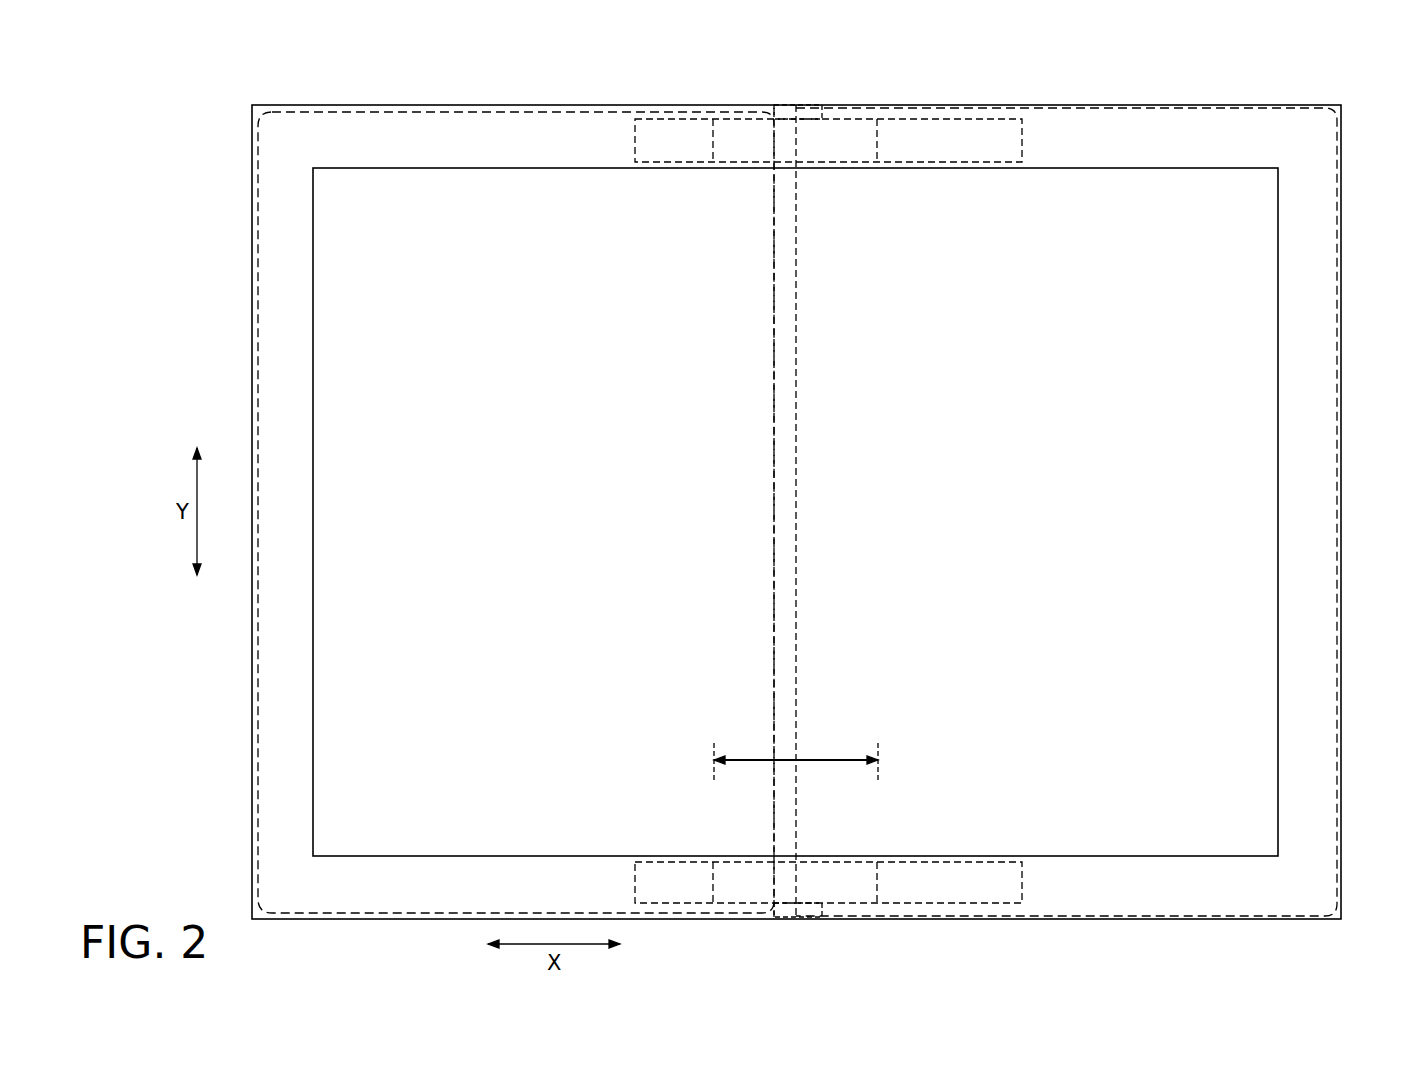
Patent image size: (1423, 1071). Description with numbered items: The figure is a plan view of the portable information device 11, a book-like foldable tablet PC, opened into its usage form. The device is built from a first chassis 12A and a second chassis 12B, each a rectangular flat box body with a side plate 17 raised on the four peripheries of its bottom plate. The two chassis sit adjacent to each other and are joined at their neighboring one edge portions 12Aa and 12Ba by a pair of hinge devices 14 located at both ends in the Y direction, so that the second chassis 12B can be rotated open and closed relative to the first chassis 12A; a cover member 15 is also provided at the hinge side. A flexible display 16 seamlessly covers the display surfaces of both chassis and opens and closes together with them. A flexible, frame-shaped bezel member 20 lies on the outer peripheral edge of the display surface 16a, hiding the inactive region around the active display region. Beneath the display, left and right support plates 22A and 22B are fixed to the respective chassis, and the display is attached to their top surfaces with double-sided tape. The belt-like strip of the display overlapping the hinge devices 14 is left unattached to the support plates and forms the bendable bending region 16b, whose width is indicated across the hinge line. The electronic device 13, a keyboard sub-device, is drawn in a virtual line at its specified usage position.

The portable information device 11 is at (201, 80).
The first chassis 12A is at (450, 97).
The second chassis 12B is at (1125, 96).
The one edge portion of first chassis 12Aa is at (797, 348).
The one edge portion of second chassis 12Ba is at (793, 306).
The electronic device 13 is at (786, 450).
The hinge device 14 is at (735, 98).
The cover member 15 is at (806, 106).
The display 16 is at (362, 290).
The surface of display 16a is at (1242, 318).
The bending region 16b is at (832, 758).
The side plate 17 is at (252, 765).
The bezel member 20 is at (372, 898).
The left support plate 22A is at (350, 655).
The right support plate 22B is at (1242, 655).